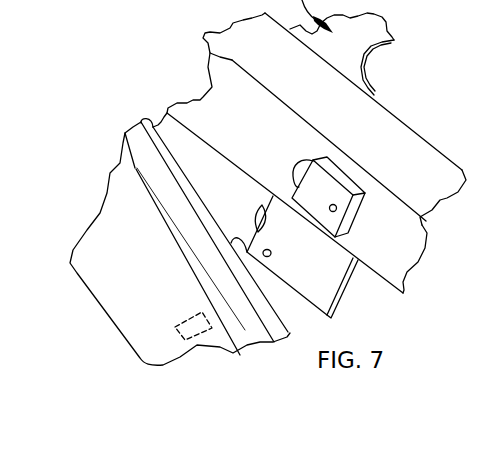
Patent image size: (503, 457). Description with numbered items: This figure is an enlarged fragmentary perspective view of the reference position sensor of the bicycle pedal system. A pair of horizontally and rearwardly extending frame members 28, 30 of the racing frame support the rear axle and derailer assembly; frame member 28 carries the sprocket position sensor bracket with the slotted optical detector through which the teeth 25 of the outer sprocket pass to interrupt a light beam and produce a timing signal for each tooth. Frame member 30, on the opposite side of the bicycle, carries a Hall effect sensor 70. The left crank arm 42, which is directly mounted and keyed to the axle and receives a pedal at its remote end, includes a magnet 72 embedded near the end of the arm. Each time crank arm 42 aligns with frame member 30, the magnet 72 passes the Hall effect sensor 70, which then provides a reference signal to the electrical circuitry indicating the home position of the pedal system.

The teeth 25 is at (366, 68).
The frame member 28 is at (393, 128).
The frame member 30 is at (383, 250).
The crank arm 42 is at (110, 283).
The Hall effect sensor 70 is at (313, 177).
The magnet 72 is at (201, 328).